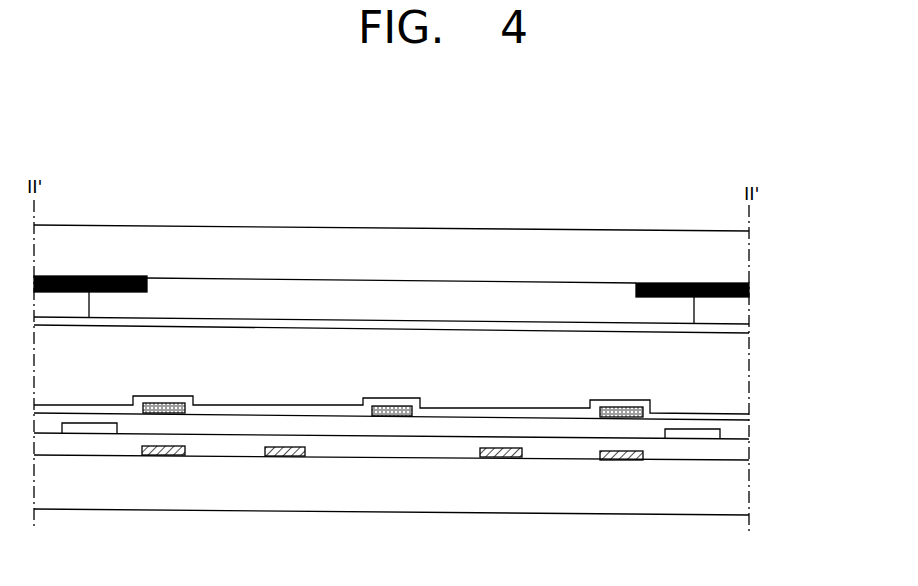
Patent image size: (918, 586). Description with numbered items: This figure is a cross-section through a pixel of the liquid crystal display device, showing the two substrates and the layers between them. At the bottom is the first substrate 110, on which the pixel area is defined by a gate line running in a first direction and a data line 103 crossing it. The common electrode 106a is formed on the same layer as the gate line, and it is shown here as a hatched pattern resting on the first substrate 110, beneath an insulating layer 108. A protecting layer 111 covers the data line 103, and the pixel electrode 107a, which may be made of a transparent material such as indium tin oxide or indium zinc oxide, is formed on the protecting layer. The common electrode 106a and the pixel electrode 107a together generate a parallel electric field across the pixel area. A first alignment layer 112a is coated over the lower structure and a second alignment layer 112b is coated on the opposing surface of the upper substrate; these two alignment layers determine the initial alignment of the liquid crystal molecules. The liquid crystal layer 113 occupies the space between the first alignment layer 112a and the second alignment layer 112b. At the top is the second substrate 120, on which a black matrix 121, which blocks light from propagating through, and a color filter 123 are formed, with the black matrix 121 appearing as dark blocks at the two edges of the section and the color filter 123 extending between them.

The data line 103 is at (88, 433).
The common electrode 106a is at (280, 458).
The pixel electrode 107a is at (389, 416).
The gate insulating layer 108 is at (735, 452).
The first substrate 110 is at (735, 495).
The passivation layer 111 is at (735, 430).
The first alignment layer 112a is at (735, 413).
The second alignment layer 112b is at (743, 329).
The liquid crystal layer 113 is at (735, 369).
The second substrate 120 is at (737, 258).
The black matrix 121 is at (119, 278).
The color filter 123 is at (353, 293).